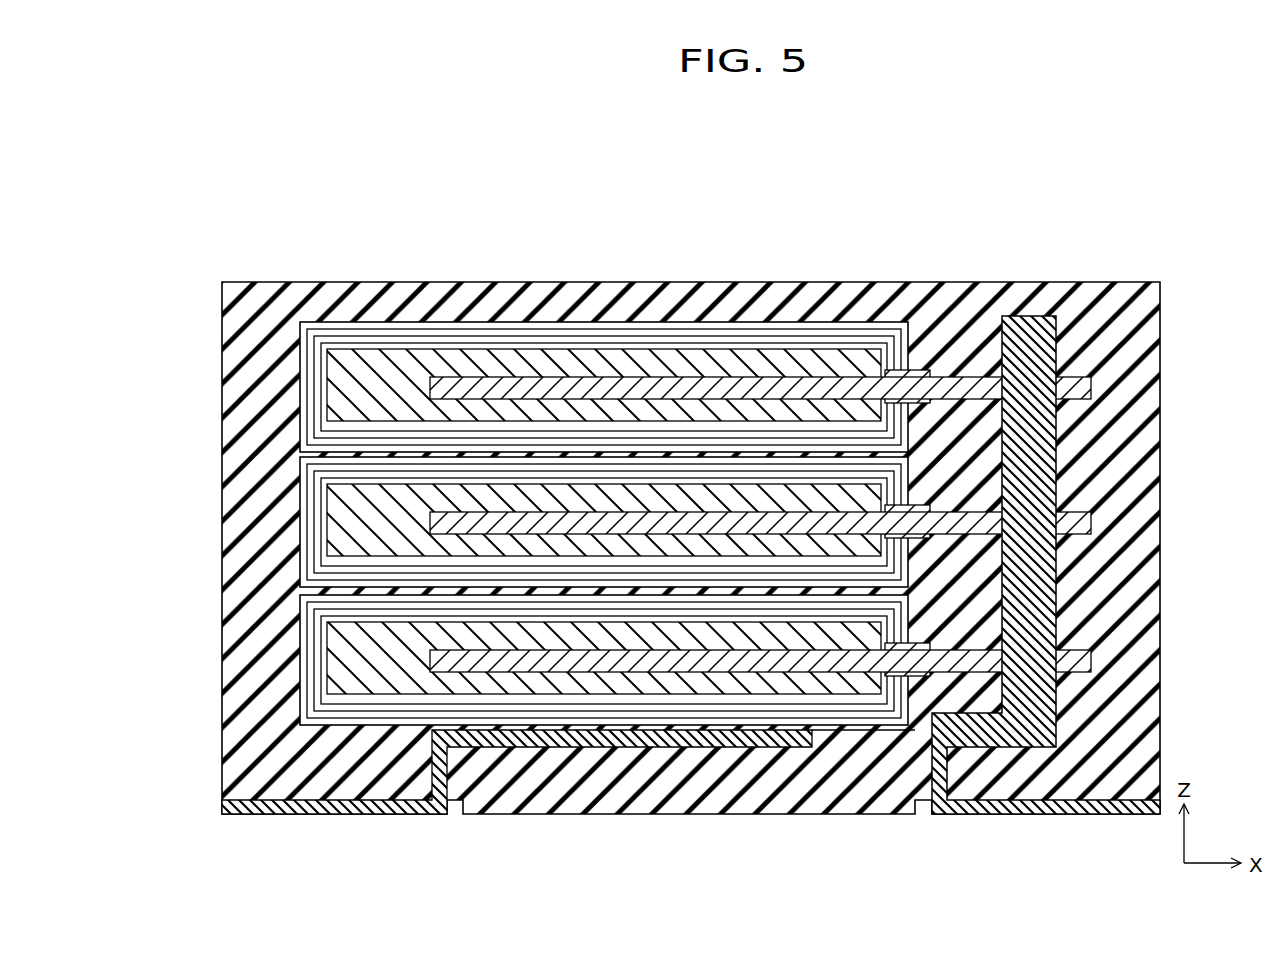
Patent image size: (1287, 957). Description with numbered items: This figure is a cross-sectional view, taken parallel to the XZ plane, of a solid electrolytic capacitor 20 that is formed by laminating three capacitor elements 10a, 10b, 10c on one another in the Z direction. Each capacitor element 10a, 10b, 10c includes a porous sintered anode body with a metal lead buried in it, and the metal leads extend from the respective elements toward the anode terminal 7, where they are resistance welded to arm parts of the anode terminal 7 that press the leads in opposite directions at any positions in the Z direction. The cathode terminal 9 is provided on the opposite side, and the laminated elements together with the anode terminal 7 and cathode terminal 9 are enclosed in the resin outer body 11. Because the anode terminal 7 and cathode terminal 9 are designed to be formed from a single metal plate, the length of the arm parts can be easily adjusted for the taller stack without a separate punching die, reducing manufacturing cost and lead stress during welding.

The solid electrolytic capacitor 20 is at (680, 541).
The resin outer body 11 is at (213, 262).
The capacitor element 10a is at (272, 663).
The capacitor element 10b is at (268, 542).
The capacitor element 10c is at (272, 410).
The anode terminal 7 is at (1093, 571).
The cathode terminal 9 is at (540, 772).